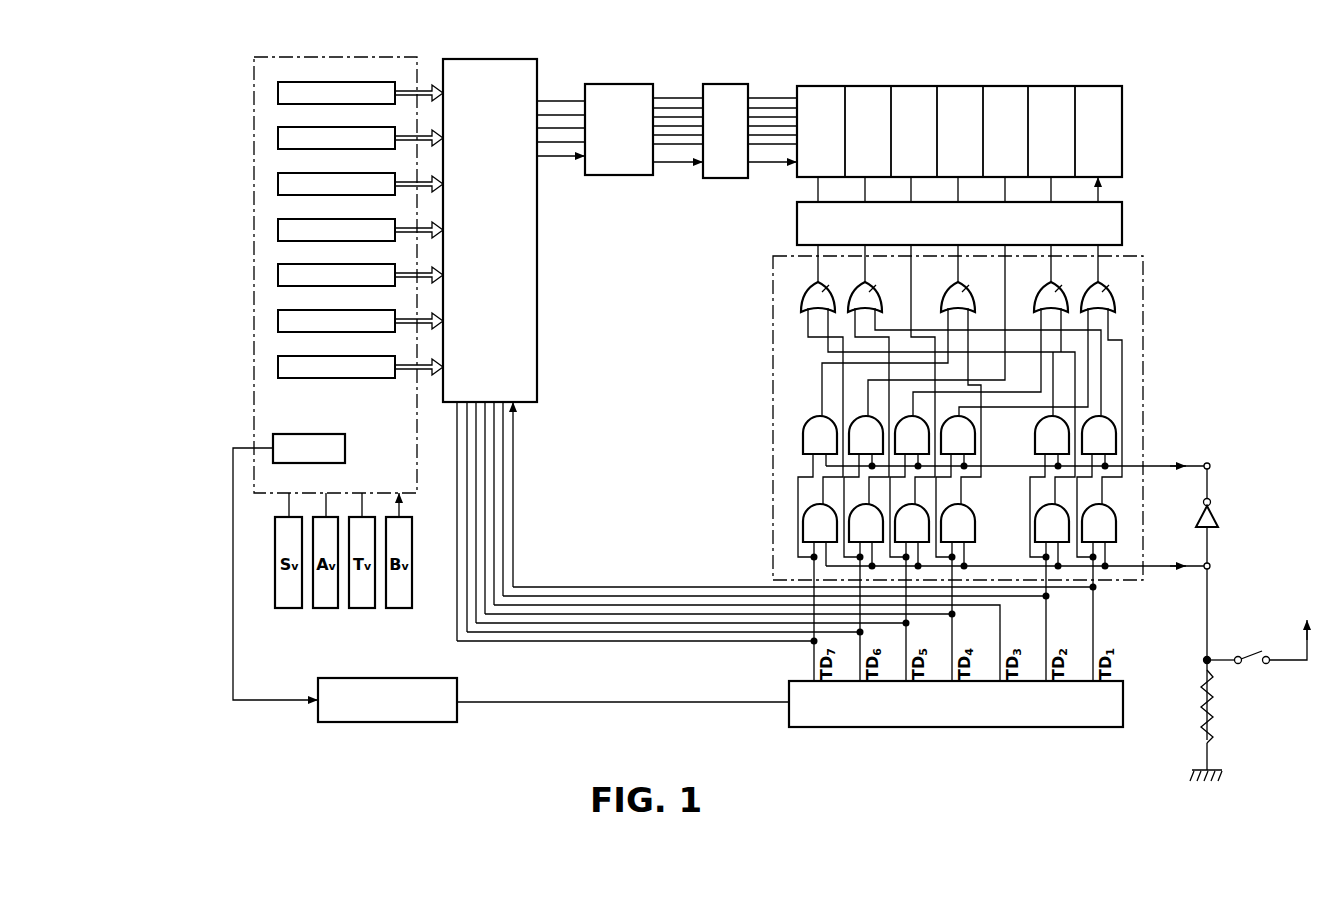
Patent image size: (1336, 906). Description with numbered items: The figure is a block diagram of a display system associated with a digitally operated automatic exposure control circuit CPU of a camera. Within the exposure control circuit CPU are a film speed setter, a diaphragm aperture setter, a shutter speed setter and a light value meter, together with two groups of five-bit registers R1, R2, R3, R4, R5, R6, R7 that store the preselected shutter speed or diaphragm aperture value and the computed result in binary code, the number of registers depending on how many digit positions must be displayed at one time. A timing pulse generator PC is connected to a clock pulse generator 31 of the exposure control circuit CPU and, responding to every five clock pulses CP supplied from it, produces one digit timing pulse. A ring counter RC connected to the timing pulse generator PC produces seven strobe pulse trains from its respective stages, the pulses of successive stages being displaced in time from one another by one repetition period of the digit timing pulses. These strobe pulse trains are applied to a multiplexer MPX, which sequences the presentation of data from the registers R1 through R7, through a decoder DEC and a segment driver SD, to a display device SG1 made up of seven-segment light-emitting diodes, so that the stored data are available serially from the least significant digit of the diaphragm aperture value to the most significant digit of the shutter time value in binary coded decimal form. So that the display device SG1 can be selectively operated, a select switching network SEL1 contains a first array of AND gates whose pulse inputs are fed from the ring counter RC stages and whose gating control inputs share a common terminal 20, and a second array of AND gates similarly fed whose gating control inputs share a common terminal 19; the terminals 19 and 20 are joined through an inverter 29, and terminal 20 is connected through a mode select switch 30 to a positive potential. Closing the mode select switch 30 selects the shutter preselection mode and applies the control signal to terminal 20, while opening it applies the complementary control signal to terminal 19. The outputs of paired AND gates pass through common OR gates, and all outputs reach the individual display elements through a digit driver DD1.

The clock pulse generator 31 is at (309, 448).
The inverter 29 is at (1214, 512).
The mode select switch 30 is at (1252, 660).
The common terminal 19 is at (1242, 454).
The common terminal 20 is at (1208, 562).
The digitally operated automatic exposure control circuit CPU is at (408, 441).
The multiplexer MPX is at (490, 230).
The decoder DEC is at (619, 129).
The segment driver SD is at (725, 131).
The display device SG1 is at (1122, 137).
The digit driver DD1 is at (959, 223).
The select switching network SEL1 is at (1143, 352).
The ring counter RC is at (956, 704).
The timing pulse generator PC is at (387, 700).
The clock pulses CP is at (292, 691).
The 5-bit register R1 is at (384, 84).
The 5-bit register R2 is at (384, 129).
The 5-bit register R3 is at (384, 175).
The 5-bit register R4 is at (384, 221).
The 5-bit register R5 is at (384, 266).
The 5-bit register R6 is at (384, 312).
The 5-bit register R7 is at (384, 358).